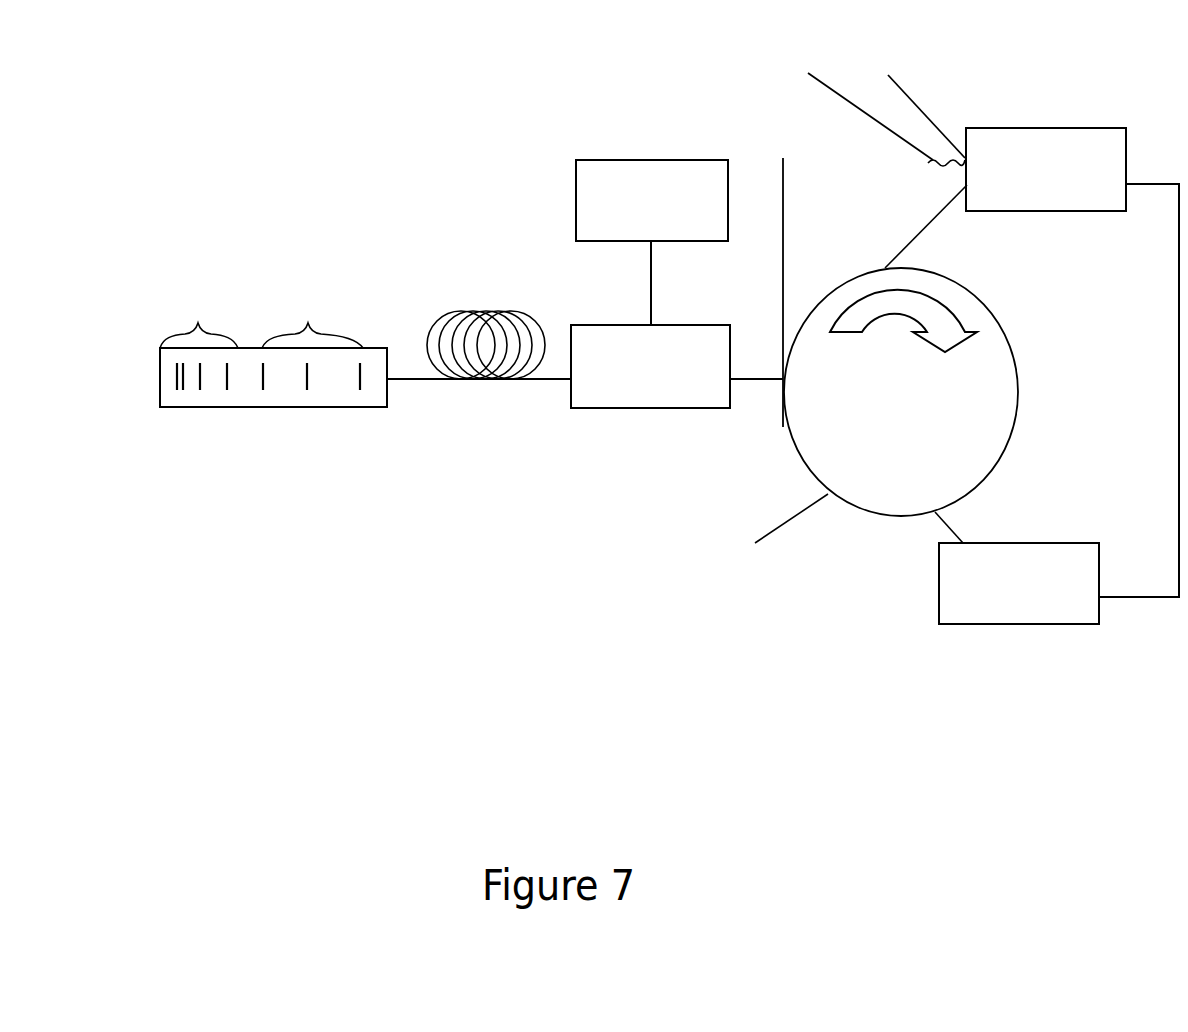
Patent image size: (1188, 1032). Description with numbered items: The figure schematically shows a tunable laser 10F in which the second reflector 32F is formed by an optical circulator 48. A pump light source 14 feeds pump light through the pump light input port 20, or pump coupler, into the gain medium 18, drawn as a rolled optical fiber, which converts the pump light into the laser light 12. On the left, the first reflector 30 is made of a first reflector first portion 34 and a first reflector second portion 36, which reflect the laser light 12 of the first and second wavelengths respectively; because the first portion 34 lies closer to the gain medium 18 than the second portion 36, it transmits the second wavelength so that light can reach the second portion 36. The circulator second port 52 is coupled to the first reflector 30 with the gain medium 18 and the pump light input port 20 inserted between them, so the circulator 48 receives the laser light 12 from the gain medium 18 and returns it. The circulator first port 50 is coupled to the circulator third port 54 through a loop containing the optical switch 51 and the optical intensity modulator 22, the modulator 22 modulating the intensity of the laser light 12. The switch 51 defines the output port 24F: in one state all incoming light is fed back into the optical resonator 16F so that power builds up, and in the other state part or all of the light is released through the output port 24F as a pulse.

The tunable laser 10F is at (275, 583).
The laser light 12 is at (866, 112).
The pump light source 14 is at (640, 232).
The optical resonator 16F is at (400, 381).
The gain medium 18 is at (440, 318).
The pump light input port 20 is at (638, 399).
The optical intensity modulator 22 is at (1006, 613).
The output port 24F is at (919, 100).
The first reflector 30 is at (260, 422).
The second reflector 32F is at (835, 518).
The first reflector first portion 34 is at (312, 317).
The first reflector second portion 36 is at (199, 317).
The optical circulator 48 is at (784, 535).
The circulator first port 50 is at (935, 512).
The optical switch 51 is at (1034, 200).
The circulator second port 52 is at (783, 279).
The circulator third port 54 is at (885, 268).